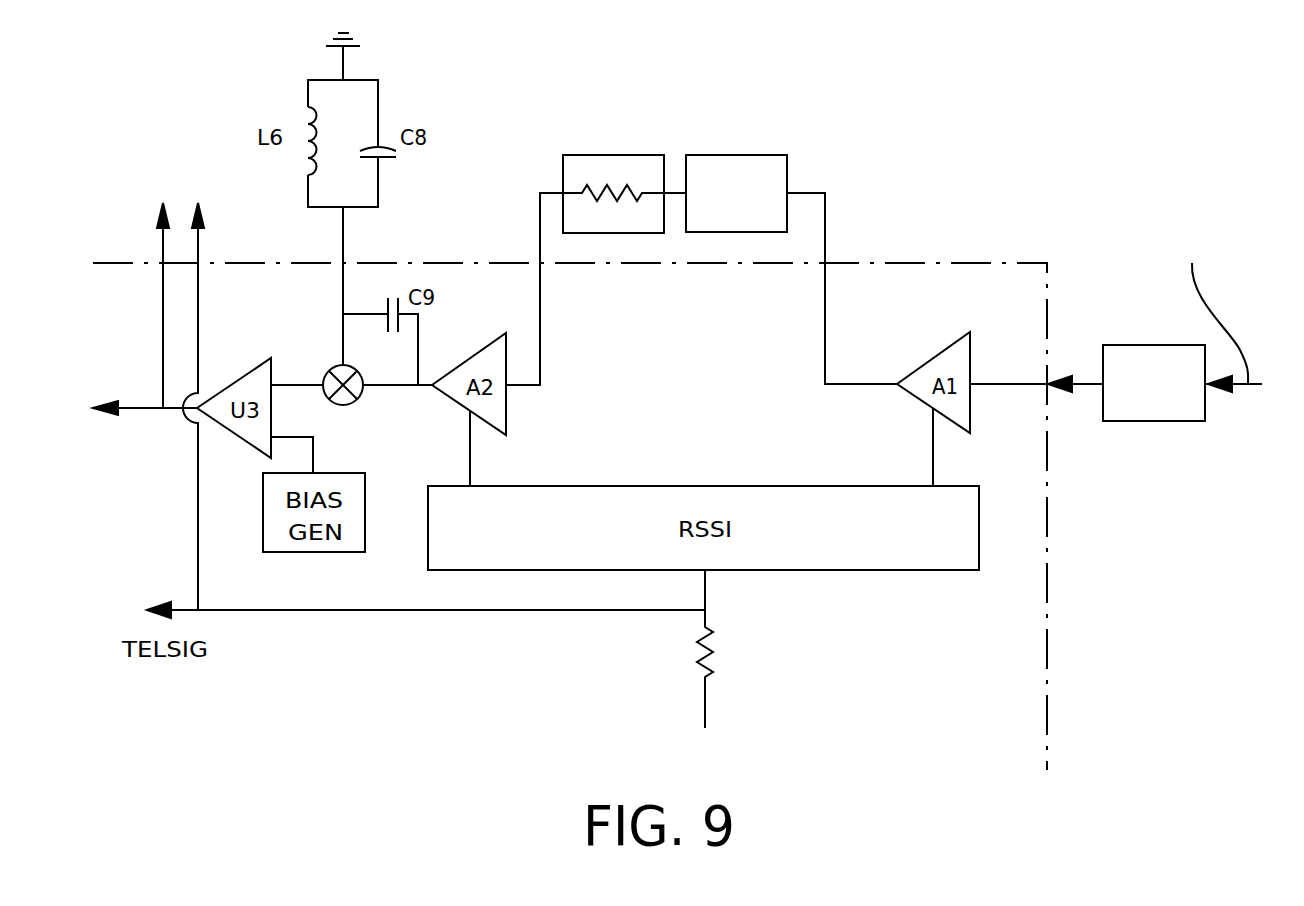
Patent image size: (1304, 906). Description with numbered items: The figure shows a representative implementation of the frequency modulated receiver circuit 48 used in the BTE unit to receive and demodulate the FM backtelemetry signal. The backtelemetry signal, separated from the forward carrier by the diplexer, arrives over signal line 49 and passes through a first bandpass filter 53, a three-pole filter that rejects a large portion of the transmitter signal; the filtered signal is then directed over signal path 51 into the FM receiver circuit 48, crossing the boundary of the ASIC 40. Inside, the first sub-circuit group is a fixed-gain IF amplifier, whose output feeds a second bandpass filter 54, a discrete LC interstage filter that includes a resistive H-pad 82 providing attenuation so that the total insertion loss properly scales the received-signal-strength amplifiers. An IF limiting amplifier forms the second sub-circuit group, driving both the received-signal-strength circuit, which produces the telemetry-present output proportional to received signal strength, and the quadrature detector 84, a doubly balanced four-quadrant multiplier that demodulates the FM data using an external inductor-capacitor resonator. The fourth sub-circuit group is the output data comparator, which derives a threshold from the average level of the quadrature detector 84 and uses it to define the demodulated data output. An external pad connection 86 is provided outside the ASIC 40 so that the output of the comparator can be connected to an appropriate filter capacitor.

The ASIC 40 is at (1048, 600).
The FM receiver circuit 48 is at (984, 154).
The signal line 49 is at (1248, 386).
The signal path 51 is at (1083, 383).
The first bandpass filter circuit 53 is at (1158, 422).
The second bandpass filter 54 is at (735, 155).
The resistive H-pad 82 is at (563, 175).
The quadrature detector 84 is at (355, 400).
The external pad connection 86 is at (163, 248).